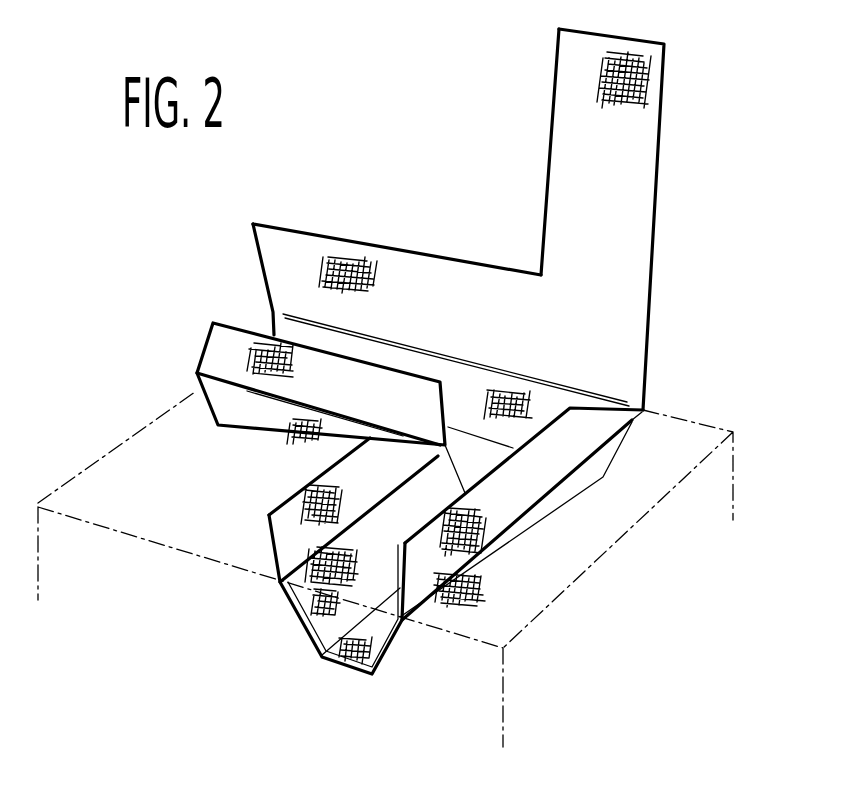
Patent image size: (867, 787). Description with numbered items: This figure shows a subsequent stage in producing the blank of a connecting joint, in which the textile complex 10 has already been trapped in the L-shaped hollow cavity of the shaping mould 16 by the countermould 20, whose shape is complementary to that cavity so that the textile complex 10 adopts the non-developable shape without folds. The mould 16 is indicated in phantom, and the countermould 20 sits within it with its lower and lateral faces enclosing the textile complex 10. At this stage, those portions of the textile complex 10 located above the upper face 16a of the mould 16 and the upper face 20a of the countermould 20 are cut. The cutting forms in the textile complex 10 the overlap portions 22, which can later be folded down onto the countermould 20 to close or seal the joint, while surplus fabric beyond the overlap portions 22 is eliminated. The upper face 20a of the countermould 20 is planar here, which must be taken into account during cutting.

The textile complex 10 is at (653, 278).
The shaping mould 16 is at (94, 465).
The upper face of the mould 16a is at (698, 468).
The countermould 20 is at (305, 640).
The upper face of the countermould 20a is at (393, 604).
The overlap portions 22 is at (646, 147).